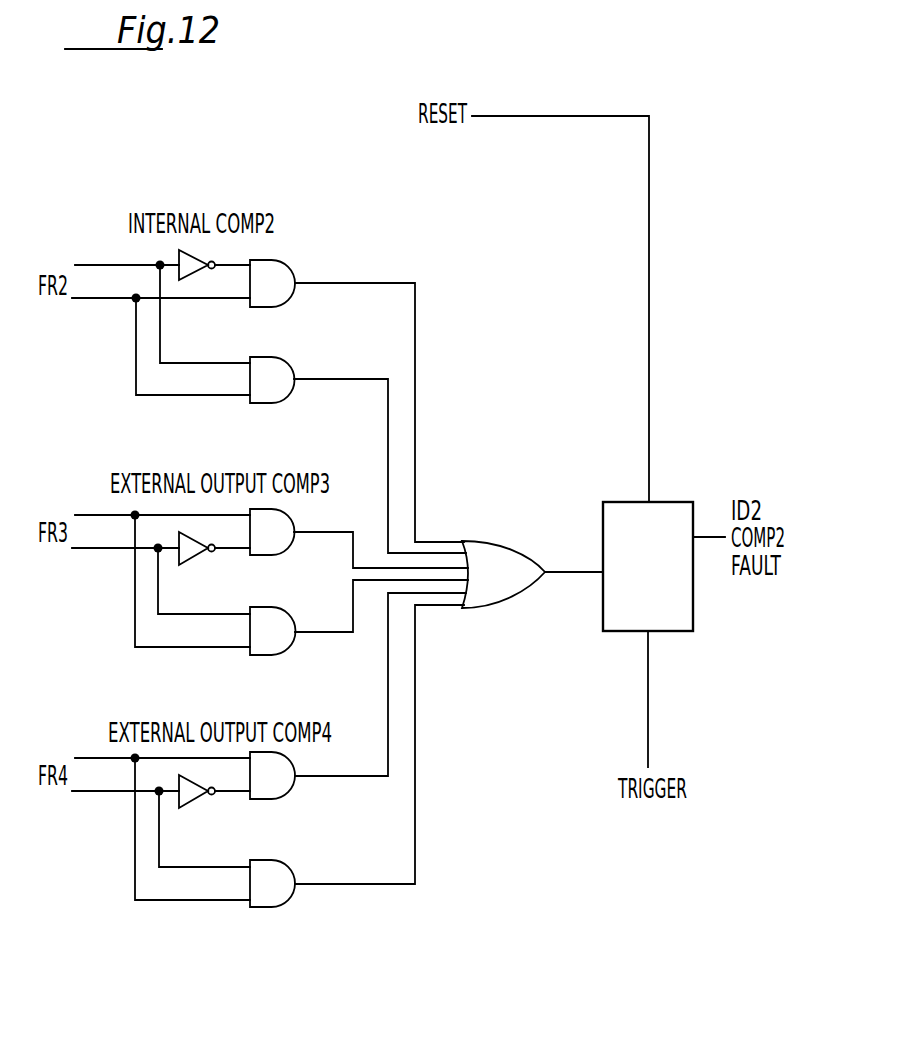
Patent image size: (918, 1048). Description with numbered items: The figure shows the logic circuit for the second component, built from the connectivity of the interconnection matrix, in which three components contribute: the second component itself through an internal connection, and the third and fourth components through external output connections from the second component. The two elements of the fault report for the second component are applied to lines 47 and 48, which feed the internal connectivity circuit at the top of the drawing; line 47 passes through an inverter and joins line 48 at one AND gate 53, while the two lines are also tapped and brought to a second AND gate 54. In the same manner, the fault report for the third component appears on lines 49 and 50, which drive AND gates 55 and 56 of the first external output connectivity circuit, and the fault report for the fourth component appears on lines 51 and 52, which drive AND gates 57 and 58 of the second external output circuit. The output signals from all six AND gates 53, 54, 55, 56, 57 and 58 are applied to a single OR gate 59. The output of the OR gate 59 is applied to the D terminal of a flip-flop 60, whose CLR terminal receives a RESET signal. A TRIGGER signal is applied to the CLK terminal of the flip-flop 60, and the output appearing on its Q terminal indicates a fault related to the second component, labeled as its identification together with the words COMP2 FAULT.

The line 47 is at (100, 263).
The line 48 is at (92, 300).
The line 49 is at (88, 513).
The line 50 is at (85, 550).
The line 51 is at (90, 757).
The line 52 is at (88, 793).
The AND gate 53 is at (277, 265).
The AND gate 54 is at (285, 397).
The AND gate 55 is at (287, 542).
The AND gate 56 is at (285, 645).
The AND gate 57 is at (284, 785).
The AND gate 58 is at (290, 900).
The OR gate 59 is at (485, 548).
The flip-flop 60 is at (620, 503).